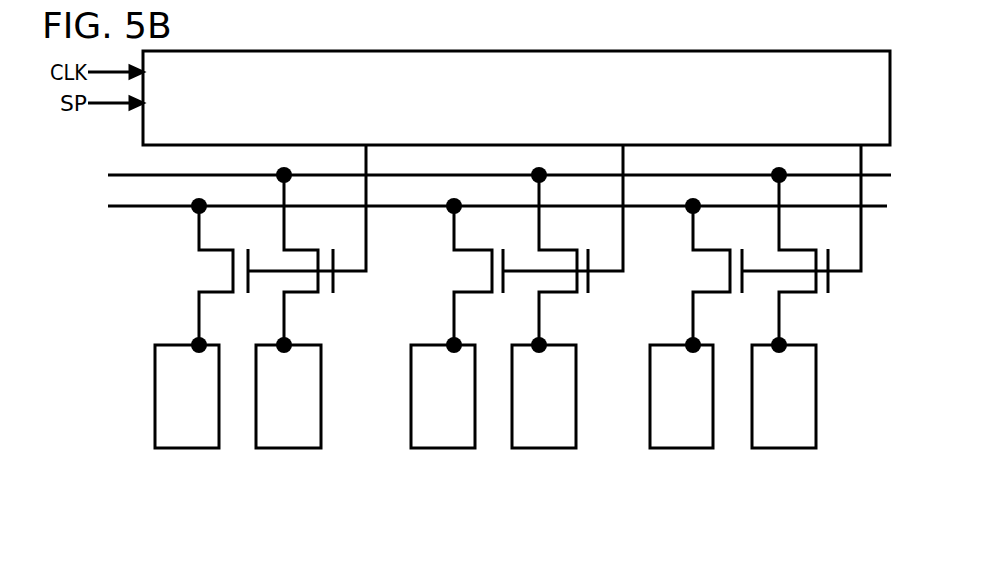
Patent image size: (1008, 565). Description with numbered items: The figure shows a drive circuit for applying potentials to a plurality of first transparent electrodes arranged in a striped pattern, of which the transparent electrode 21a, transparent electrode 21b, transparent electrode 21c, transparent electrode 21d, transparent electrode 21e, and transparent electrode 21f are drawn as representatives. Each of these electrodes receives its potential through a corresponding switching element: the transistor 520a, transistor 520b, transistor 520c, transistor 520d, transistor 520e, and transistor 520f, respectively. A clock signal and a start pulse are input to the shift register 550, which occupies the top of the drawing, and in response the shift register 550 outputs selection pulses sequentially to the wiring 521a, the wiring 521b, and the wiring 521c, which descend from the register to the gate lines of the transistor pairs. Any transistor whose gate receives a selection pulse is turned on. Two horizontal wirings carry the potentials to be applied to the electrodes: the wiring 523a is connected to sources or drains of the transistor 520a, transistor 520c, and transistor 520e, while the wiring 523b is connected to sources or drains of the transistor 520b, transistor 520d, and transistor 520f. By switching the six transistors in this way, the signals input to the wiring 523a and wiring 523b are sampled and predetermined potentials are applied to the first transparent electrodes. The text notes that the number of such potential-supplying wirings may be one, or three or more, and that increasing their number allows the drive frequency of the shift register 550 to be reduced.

The shift register 550 is at (516, 98).
The wiring 523a is at (108, 206).
The wiring 523b is at (108, 175).
The wiring 521a is at (368, 245).
The wiring 521b is at (625, 245).
The wiring 521c is at (847, 272).
The transistor 520a is at (228, 275).
The transistor 520b is at (313, 260).
The transistor 520c is at (483, 275).
The transistor 520d is at (568, 260).
The transistor 520e is at (721, 275).
The transistor 520f is at (807, 260).
The transparent electrode 21a is at (187, 392).
The transparent electrode 21b is at (288, 392).
The transparent electrode 21c is at (443, 392).
The transparent electrode 21d is at (544, 392).
The transparent electrode 21e is at (681, 392).
The transparent electrode 21f is at (784, 392).